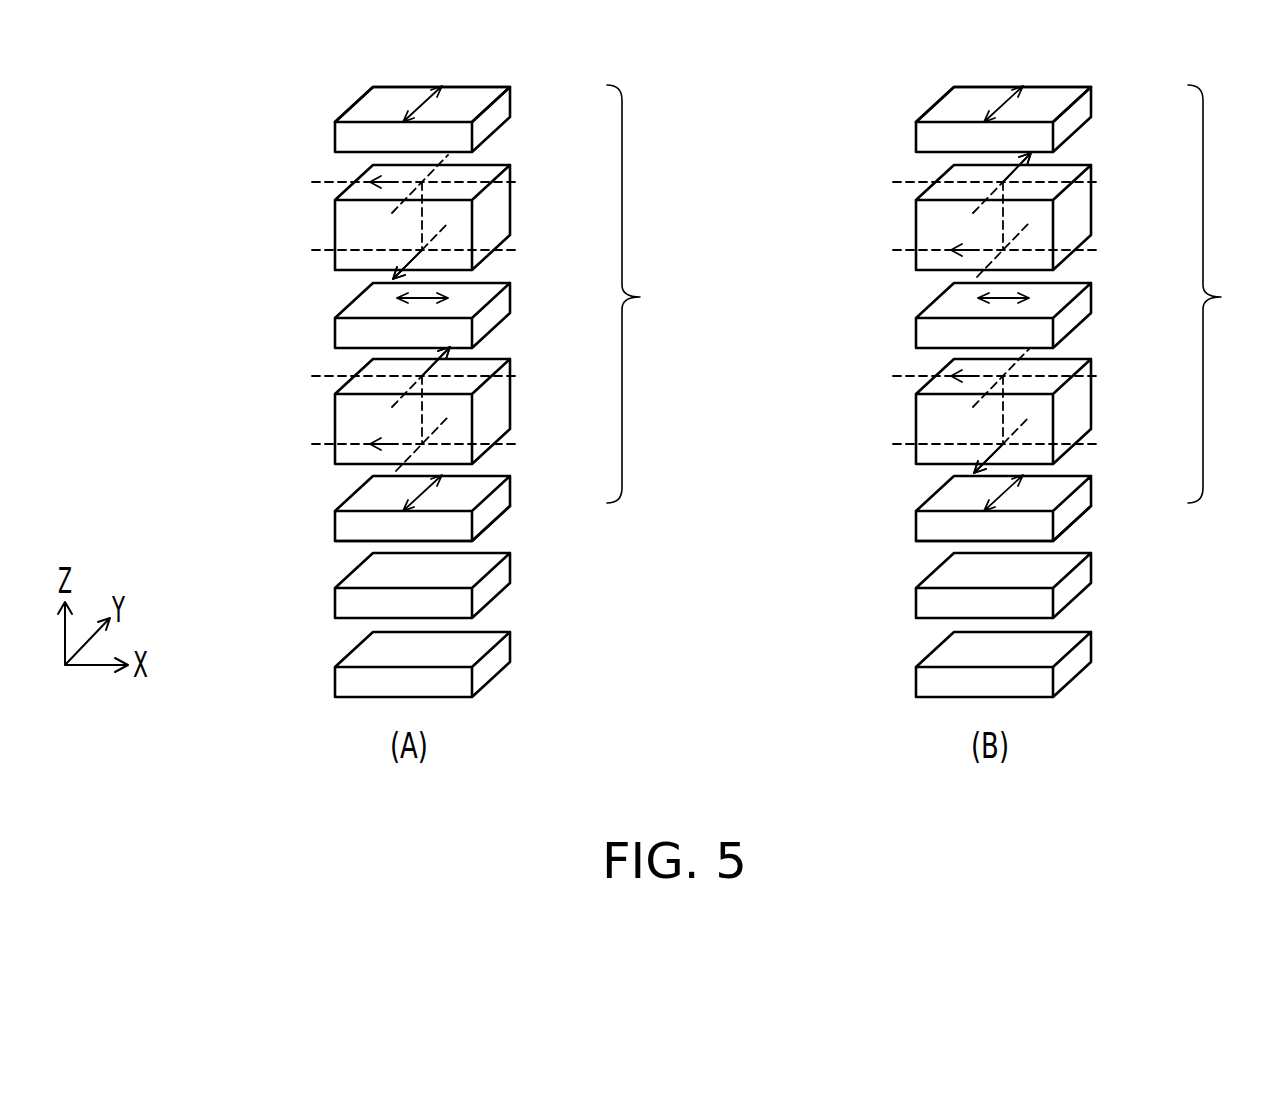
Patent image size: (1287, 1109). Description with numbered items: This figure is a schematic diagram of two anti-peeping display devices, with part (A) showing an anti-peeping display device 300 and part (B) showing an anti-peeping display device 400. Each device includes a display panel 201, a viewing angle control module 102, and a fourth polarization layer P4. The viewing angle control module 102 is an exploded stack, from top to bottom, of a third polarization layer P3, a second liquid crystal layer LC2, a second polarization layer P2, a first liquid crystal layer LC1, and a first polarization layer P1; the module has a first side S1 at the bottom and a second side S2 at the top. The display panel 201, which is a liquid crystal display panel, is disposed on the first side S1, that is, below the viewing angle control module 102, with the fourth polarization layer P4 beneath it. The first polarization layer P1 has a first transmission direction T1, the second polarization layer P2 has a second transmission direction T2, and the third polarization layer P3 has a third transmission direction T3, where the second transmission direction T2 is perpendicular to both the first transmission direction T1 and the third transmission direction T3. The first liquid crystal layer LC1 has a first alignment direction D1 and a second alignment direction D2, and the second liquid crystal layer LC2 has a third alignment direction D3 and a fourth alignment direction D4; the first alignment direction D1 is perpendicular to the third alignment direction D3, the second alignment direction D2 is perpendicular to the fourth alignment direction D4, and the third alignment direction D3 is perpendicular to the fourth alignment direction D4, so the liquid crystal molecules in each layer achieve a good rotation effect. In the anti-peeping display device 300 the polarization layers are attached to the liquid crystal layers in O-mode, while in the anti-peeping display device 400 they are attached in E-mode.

The first polarization layer P1 is at (506, 490).
The second polarization layer P2 is at (506, 295).
The third polarization layer P3 is at (506, 105).
The fourth polarization layer P4 is at (506, 645).
The first liquid crystal layer LC1 is at (506, 400).
The second liquid crystal layer LC2 is at (506, 207).
The first transmission direction T1 is at (413, 505).
The second transmission direction T2 is at (414, 302).
The third transmission direction T3 is at (414, 112).
The first alignment direction D1 is at (407, 457).
The second alignment direction D2 is at (440, 359).
The third alignment direction D3 is at (414, 256).
The fourth alignment direction D4 is at (427, 177).
The first side S1 is at (517, 537).
The second side S2 is at (512, 75).
The viewing angle control module 102 is at (935, 294).
The display panel 201 is at (506, 568).
The anti-peeping display device 300 is at (697, 715).
The anti-peeping display device 400 is at (1279, 715).